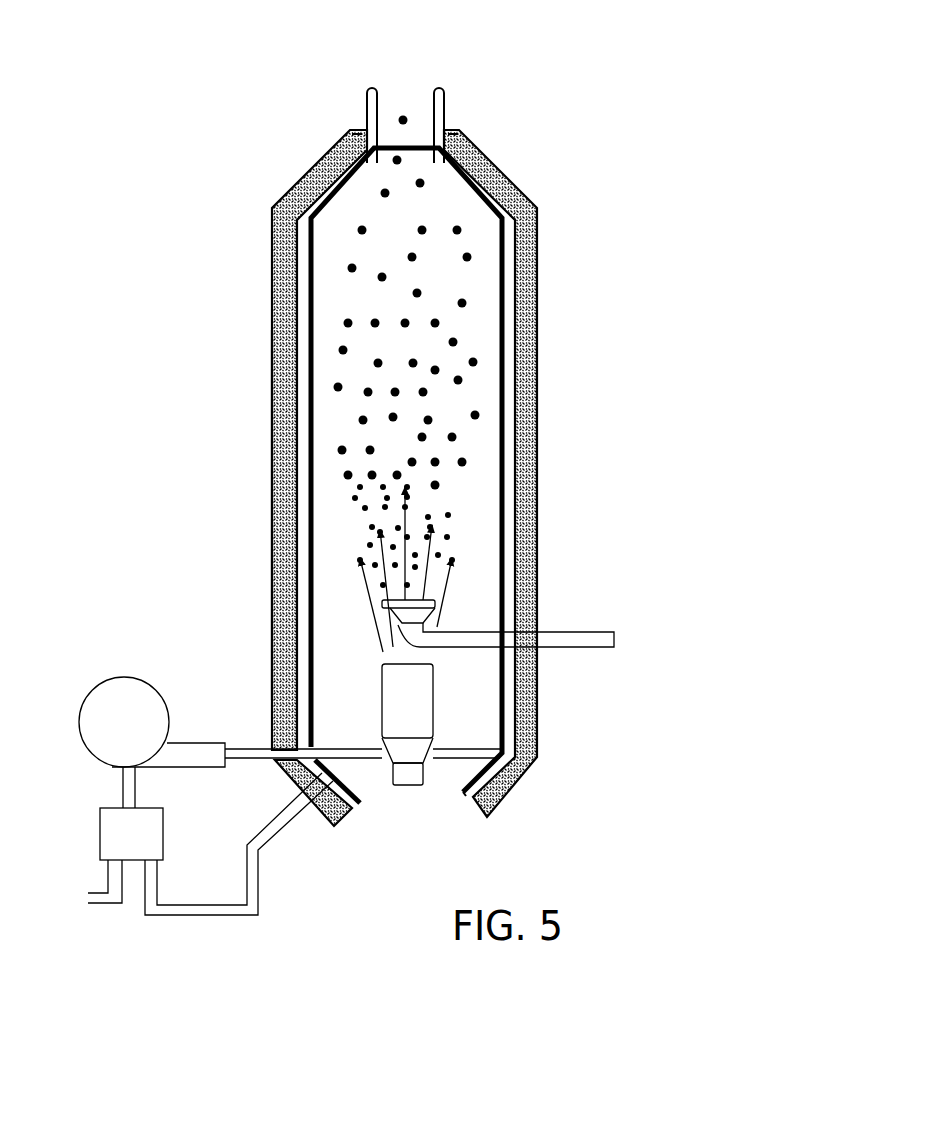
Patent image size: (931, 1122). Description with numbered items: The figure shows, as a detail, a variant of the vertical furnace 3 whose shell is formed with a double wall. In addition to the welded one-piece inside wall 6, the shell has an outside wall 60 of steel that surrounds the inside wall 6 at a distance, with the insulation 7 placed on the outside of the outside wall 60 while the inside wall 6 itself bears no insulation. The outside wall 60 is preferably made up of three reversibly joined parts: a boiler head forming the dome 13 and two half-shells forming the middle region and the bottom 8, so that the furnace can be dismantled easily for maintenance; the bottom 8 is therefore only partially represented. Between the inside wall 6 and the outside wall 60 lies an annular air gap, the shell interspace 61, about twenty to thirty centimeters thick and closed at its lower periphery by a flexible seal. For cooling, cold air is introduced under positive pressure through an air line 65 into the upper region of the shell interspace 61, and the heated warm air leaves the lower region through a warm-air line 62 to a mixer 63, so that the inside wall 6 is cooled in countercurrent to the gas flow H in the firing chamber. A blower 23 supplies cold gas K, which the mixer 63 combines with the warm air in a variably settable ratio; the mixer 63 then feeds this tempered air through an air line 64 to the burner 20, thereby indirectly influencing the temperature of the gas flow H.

The vertical furnace 3 is at (563, 123).
The outside wall 60 is at (537, 397).
The dome 13 is at (297, 193).
The insulation 7 is at (272, 322).
The shell interspace 61 is at (303, 447).
The air line 65 is at (347, 145).
The cold gas K is at (346, 137).
The inside wall 6 is at (496, 330).
The gas flow H is at (445, 580).
The burner 20 is at (433, 705).
The air line 64 is at (242, 748).
The blower 23 is at (110, 677).
The mixer 63 is at (100, 835).
The warm-air line 62 is at (258, 882).
The bottom 8 is at (507, 797).